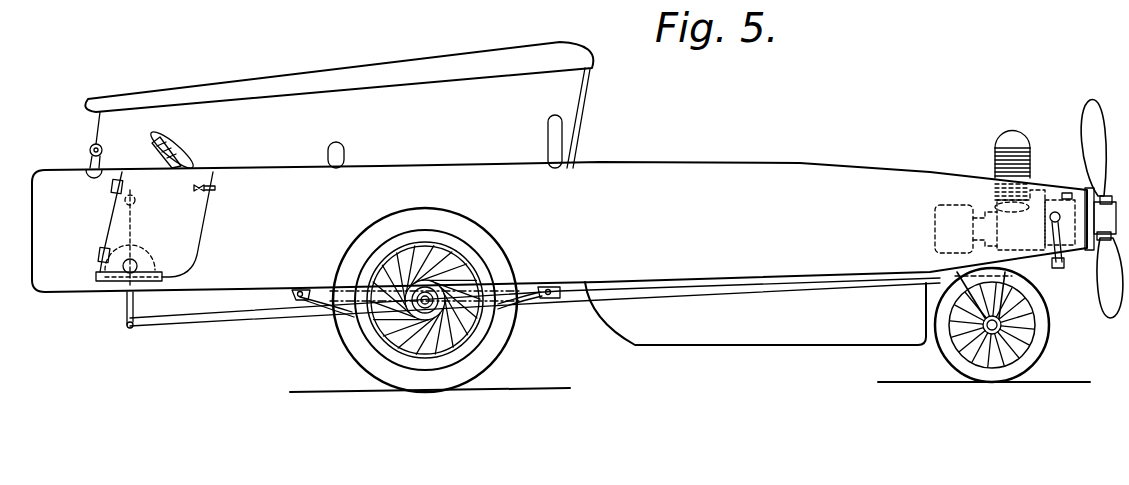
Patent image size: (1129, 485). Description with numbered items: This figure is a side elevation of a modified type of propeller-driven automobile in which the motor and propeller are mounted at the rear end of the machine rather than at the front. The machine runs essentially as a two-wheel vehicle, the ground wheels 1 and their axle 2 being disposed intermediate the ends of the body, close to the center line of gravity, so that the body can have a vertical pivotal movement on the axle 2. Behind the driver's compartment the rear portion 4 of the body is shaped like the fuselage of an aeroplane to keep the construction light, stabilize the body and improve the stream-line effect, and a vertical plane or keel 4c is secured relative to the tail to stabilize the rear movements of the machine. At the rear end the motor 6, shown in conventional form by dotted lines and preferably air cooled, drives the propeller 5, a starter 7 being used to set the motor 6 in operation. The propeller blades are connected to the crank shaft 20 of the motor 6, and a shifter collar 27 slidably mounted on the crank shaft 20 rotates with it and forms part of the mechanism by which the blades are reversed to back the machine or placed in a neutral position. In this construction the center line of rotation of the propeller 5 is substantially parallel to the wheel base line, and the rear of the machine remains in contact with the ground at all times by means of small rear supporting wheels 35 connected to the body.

The ground wheels 1 is at (341, 345).
The axle 2 is at (489, 353).
The rear portion of the body 4 is at (594, 174).
The vertical plane or keel 4c is at (657, 335).
The propeller 5 is at (1084, 127).
The motor 6 is at (1000, 164).
The starter 7 is at (943, 205).
The shifter collar 27 is at (1058, 200).
The crank shaft 20 is at (1096, 256).
The rear supporting wheels 35 is at (948, 355).